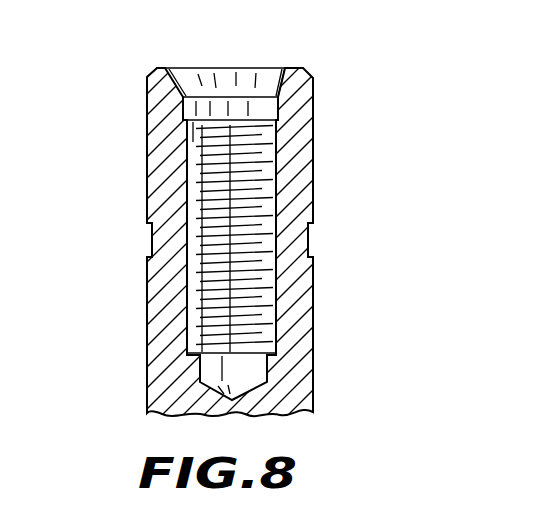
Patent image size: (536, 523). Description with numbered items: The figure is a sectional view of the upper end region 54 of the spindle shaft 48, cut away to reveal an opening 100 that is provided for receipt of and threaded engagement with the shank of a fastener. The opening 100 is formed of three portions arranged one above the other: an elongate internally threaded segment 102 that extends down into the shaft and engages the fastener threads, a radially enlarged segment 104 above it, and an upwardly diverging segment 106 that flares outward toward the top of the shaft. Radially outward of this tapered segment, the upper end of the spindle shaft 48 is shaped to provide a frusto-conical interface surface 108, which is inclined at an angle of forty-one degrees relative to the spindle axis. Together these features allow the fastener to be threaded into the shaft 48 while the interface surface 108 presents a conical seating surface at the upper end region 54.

The shaft 48 is at (303, 326).
The upper end region 54 is at (303, 147).
The opening 100 is at (187, 168).
The elongate internally threaded segment 102 is at (203, 298).
The radially enlarged segment 104 is at (186, 100).
The upwardly diverging segment 106 is at (289, 82).
The frusto-conical interface surface 108 is at (157, 68).